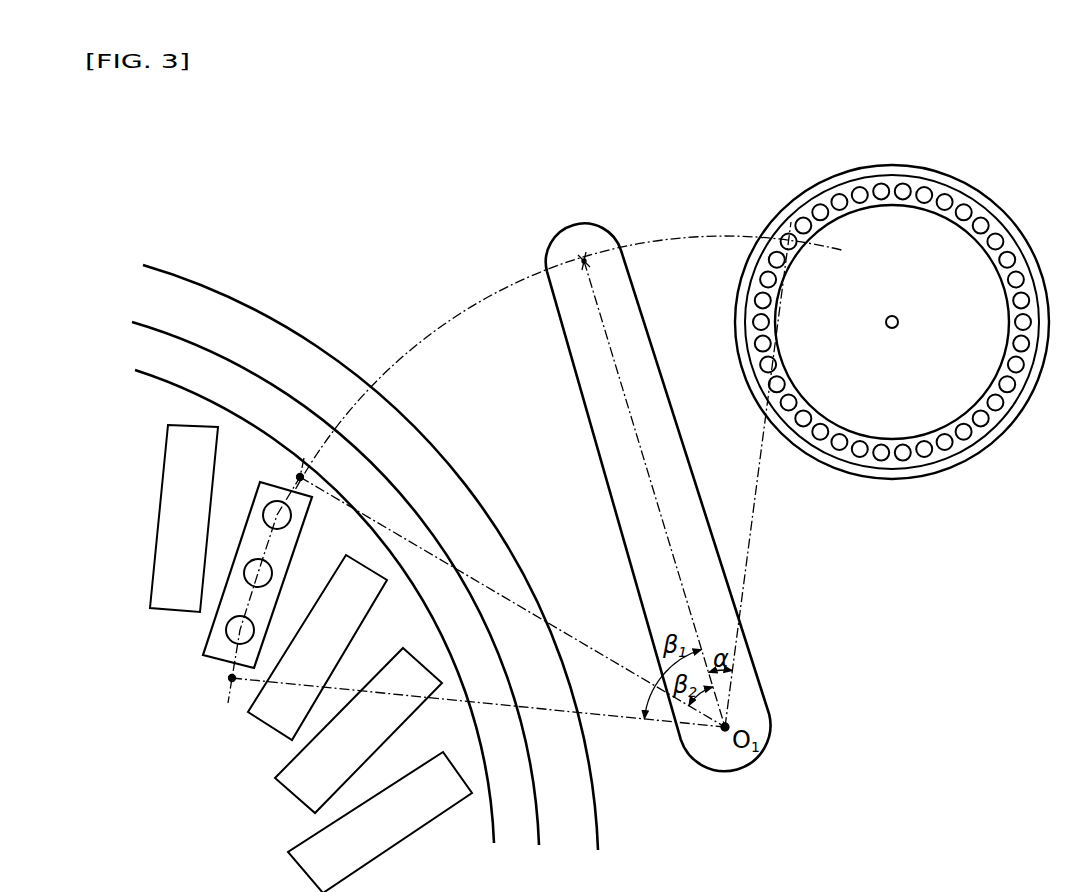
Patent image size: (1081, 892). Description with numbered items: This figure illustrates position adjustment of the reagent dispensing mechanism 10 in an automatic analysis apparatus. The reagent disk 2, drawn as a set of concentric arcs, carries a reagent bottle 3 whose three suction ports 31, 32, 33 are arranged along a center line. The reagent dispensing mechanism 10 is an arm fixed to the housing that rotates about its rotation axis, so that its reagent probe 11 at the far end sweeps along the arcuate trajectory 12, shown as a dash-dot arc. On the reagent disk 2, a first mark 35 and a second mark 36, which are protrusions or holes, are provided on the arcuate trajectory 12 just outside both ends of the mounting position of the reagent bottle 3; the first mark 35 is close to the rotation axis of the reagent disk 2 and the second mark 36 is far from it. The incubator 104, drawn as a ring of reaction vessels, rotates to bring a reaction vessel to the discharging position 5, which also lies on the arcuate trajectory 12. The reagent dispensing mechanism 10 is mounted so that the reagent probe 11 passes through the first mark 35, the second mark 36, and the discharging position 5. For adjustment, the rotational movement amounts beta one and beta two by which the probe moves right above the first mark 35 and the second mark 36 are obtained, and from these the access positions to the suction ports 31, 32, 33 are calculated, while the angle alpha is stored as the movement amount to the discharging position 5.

The reagent disk 2 is at (237, 430).
The reagent bottle 3 is at (278, 478).
The discharging position 5 is at (778, 218).
The reagent dispensing mechanism 10 is at (560, 237).
The reagent probe 11 is at (590, 252).
The arcuate trajectory 12 is at (473, 303).
The suction port 31 is at (205, 650).
The suction port 32 is at (243, 570).
The suction port 33 is at (260, 506).
The first mark 35 is at (228, 679).
The second mark 36 is at (302, 477).
The incubator 104 is at (855, 167).